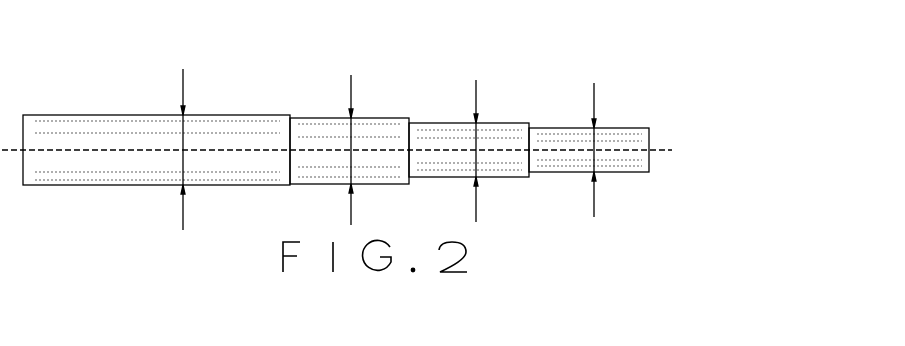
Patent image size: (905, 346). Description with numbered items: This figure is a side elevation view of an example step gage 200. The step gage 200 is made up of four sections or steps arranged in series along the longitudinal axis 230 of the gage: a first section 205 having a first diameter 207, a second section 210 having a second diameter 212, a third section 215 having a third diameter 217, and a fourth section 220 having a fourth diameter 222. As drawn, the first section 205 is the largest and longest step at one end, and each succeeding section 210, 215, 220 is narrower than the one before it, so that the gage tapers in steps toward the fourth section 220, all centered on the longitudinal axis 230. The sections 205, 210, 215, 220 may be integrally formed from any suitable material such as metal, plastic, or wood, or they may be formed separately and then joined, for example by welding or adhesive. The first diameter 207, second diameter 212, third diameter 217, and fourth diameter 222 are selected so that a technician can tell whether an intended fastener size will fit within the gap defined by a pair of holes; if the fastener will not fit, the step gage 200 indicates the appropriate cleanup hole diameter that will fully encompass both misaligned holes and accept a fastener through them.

The step gage 200 is at (363, 99).
The first section 205 is at (121, 113).
The first diameter 207 is at (183, 85).
The second section 210 is at (323, 130).
The second diameter 212 is at (352, 88).
The third section 215 is at (453, 138).
The third diameter 217 is at (476, 93).
The fourth section 220 is at (573, 138).
The fourth diameter 222 is at (594, 97).
The longitudinal axis 230 is at (663, 150).